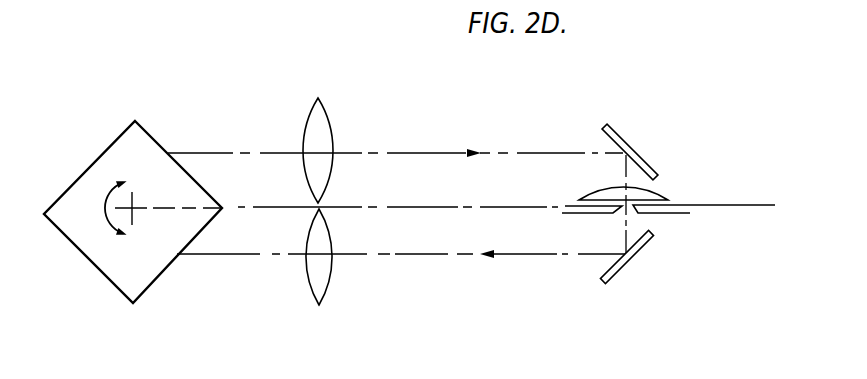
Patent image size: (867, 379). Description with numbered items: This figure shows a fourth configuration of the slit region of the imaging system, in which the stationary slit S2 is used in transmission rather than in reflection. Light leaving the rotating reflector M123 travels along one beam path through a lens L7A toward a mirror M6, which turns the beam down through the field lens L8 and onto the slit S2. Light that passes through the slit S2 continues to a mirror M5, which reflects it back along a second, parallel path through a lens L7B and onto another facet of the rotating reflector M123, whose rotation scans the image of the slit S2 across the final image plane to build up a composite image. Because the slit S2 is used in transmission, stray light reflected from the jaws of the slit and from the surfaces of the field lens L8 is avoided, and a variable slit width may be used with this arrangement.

The rotating reflector M123 is at (116, 134).
The lens L7A is at (331, 115).
The lens L7B is at (329, 293).
The mirror M6 is at (621, 130).
The field lens L8 is at (658, 188).
The stationary slit S2 is at (635, 217).
The mirror M5 is at (628, 258).